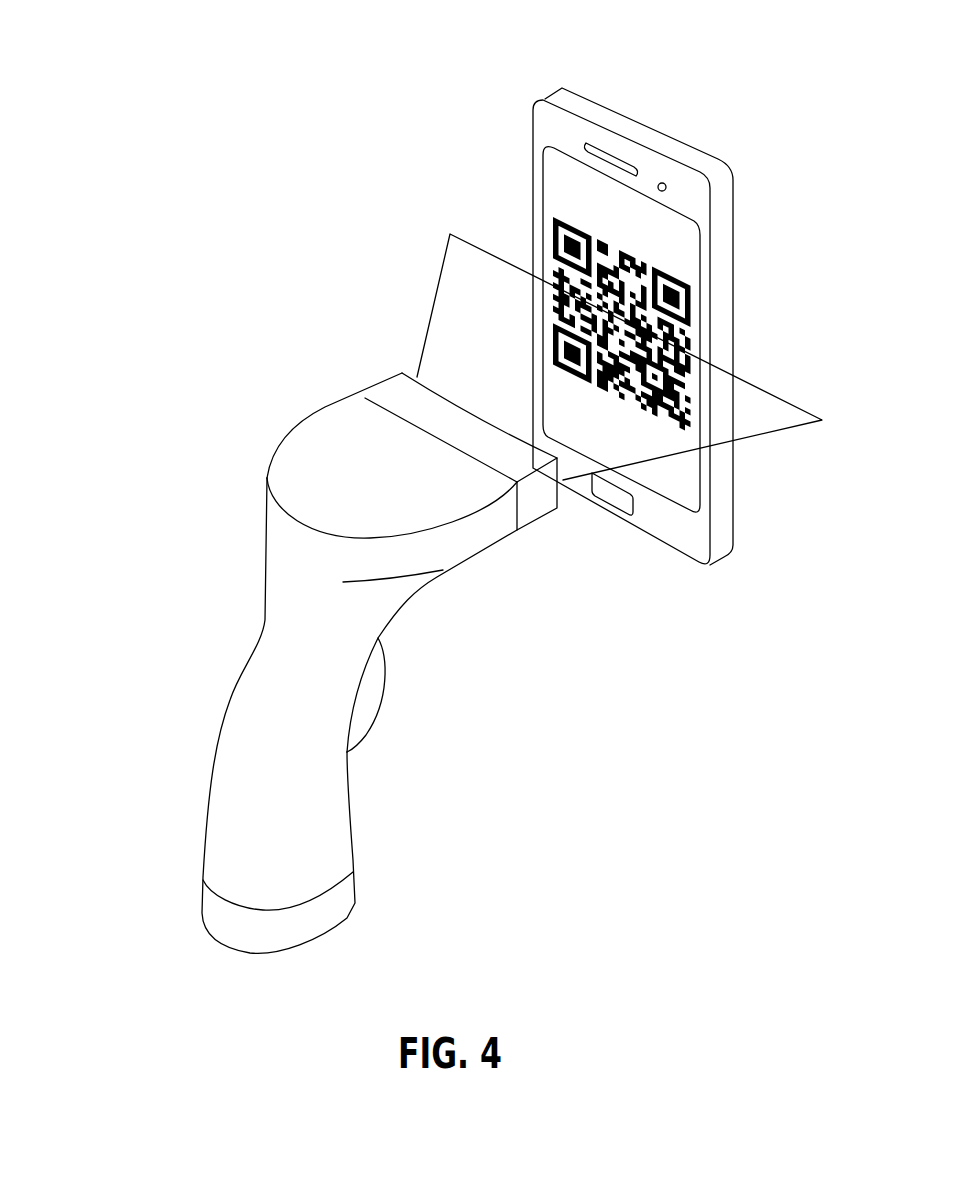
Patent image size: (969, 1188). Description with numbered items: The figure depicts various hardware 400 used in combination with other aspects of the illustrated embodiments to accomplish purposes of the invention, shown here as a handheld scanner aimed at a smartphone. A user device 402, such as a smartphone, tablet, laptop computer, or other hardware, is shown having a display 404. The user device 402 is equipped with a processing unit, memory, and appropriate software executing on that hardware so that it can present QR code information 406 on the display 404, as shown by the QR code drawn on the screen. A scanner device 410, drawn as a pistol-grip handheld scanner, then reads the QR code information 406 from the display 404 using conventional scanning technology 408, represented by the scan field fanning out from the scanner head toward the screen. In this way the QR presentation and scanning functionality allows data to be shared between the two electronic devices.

The hardware 400 is at (106, 66).
The user device 402 is at (687, 152).
The display 404 is at (680, 215).
The QR code information 406 is at (690, 258).
The scanning technology 408 is at (765, 436).
The scanner device 410 is at (473, 540).